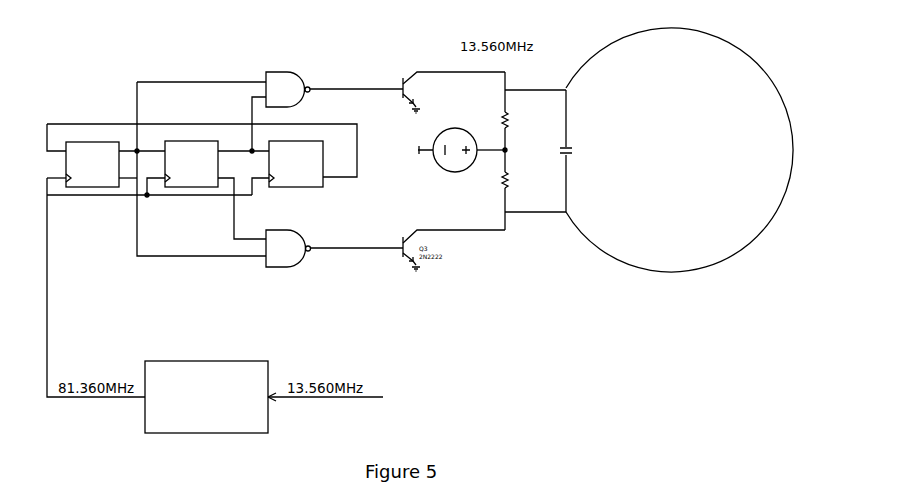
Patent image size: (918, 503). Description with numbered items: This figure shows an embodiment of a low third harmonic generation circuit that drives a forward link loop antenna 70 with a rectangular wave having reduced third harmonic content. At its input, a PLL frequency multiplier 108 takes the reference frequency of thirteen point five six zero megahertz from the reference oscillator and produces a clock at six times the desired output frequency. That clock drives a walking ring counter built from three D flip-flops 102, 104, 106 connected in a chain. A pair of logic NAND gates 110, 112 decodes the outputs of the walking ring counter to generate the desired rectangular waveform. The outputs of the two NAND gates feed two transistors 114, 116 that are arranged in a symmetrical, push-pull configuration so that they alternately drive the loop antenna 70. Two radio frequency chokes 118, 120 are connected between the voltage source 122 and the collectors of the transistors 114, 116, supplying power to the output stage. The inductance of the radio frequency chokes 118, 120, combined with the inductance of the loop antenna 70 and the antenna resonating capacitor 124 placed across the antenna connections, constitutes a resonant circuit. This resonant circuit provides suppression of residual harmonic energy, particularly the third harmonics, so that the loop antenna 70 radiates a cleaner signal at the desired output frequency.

The forward link loop antenna 70 is at (637, 267).
The D flip-flop 102 is at (92, 142).
The D flip-flop 104 is at (185, 141).
The D flip-flop 106 is at (300, 187).
The PLL frequency multiplier 108 is at (177, 361).
The logic (NAND) gate 110 is at (282, 71).
The logic (NAND) gate 112 is at (283, 268).
The transistor 114 is at (407, 70).
The transistor 116 is at (402, 258).
The radio frequency choke 118 is at (508, 112).
The radio frequency choke 120 is at (513, 193).
The voltage source 122 is at (433, 150).
The antenna resonating capacitor 124 is at (572, 163).